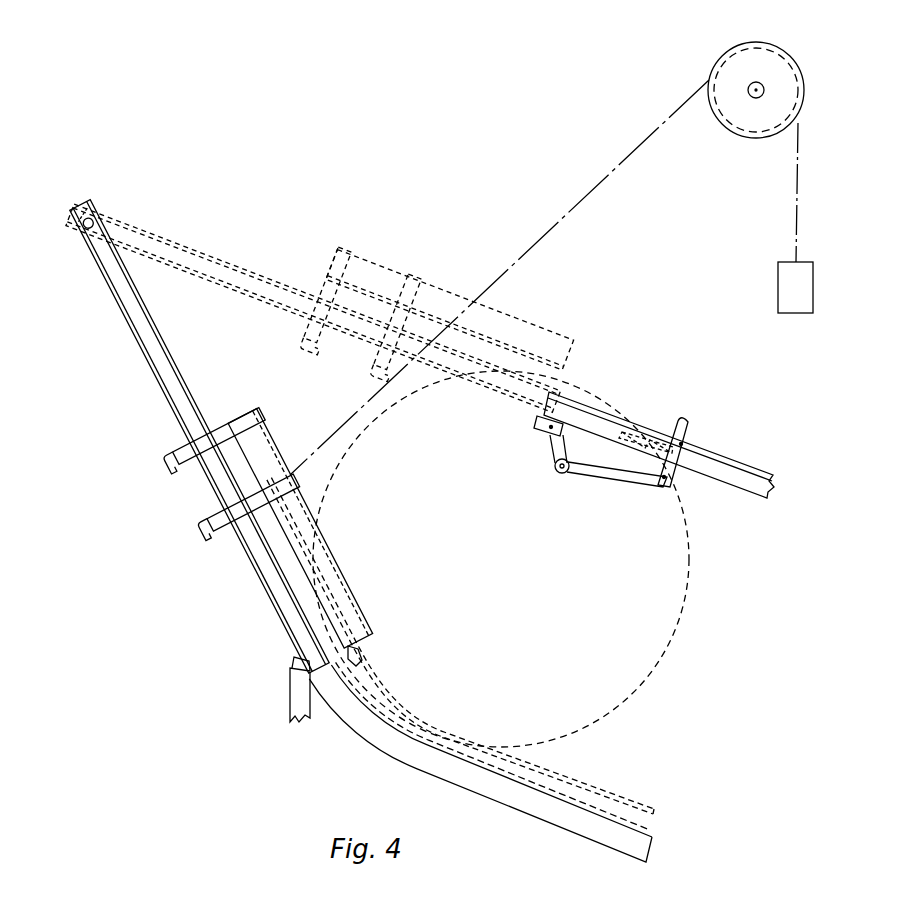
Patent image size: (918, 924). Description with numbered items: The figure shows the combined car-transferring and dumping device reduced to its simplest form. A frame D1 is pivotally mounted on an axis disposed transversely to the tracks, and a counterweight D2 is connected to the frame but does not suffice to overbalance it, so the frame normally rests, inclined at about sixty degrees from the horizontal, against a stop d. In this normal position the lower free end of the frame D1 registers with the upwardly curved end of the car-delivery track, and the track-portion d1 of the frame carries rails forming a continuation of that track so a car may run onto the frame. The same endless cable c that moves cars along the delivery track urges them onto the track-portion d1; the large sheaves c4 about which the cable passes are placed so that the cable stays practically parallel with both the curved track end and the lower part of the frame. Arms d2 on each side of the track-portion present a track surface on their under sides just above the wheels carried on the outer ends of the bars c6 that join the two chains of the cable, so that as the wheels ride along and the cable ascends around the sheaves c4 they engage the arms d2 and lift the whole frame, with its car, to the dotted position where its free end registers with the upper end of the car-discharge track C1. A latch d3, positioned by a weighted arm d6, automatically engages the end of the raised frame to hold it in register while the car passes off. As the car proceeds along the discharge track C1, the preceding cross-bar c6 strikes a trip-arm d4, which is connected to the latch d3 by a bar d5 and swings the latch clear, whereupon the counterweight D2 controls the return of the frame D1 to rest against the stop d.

The frame D1 is at (209, 410).
The track-portion of frame d1 is at (271, 597).
The arms d2 is at (344, 608).
The latch d3 is at (554, 443).
The trip-arm d4 is at (689, 428).
The bar d5 is at (588, 492).
The weighted arm d6 is at (622, 441).
The stop d is at (300, 684).
The endless cable c is at (650, 812).
The sheaves c4 is at (668, 658).
The bars c6 is at (356, 657).
The car-discharge track C1 is at (650, 851).
The counterweight D2 is at (795, 287).